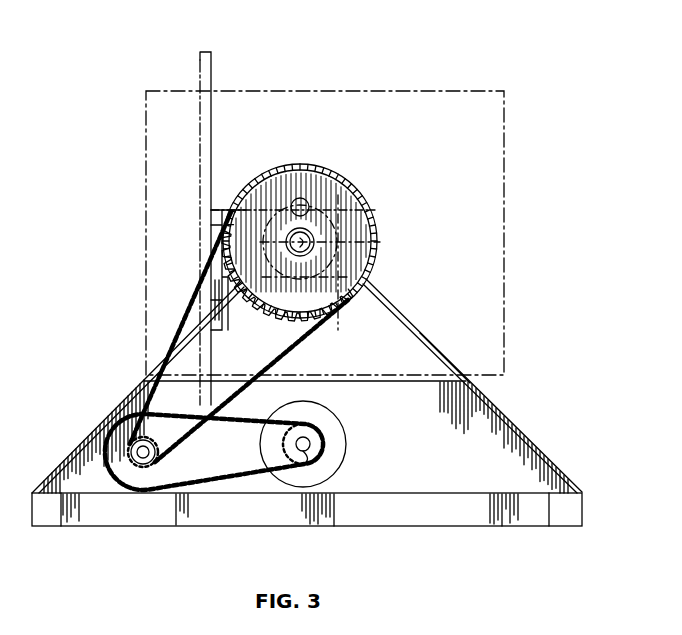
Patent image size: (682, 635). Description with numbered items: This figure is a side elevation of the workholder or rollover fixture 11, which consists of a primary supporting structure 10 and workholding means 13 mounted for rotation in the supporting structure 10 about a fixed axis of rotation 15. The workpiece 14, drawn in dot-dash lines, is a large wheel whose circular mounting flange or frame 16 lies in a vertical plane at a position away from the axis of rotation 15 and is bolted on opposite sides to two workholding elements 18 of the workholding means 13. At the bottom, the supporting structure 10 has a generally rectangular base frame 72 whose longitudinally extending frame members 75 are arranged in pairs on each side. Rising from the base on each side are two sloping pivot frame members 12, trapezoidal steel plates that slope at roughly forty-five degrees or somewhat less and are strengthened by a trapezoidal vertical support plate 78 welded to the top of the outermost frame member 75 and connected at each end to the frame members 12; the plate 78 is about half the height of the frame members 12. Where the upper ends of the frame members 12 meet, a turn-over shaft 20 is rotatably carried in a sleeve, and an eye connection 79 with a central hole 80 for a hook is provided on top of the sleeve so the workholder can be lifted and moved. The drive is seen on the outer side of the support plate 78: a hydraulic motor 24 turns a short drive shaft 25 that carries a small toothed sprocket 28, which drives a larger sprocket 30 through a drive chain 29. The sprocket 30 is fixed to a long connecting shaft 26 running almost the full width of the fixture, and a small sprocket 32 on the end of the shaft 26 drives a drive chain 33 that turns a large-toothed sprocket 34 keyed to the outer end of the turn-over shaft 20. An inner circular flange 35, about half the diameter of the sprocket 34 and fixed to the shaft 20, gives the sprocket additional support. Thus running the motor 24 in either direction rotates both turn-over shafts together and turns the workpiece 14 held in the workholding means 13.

The primary supporting structure 10 is at (582, 513).
The workholder or rollover fixture 11 is at (142, 380).
The sloping pivot frame member 12 is at (500, 437).
The workholding means 13 is at (212, 222).
The workpiece 14 is at (503, 200).
The axis of rotation 15 is at (376, 243).
The circular mounting flange or frame 16 is at (211, 62).
The workholding element 18 is at (222, 210).
The turn-over shaft 20 is at (346, 214).
The motor 24 is at (340, 450).
The drive shaft 25 is at (327, 493).
The connecting shaft 26 is at (141, 460).
The toothed sprocket 28 is at (322, 433).
The drive chain 29 is at (224, 484).
The sprocket 30 is at (186, 456).
The small sprocket 32 is at (118, 418).
The drive chain 33 is at (186, 318).
The large-toothed sprocket 34 is at (275, 313).
The inner circular flange 35 is at (372, 210).
The base frame 72 is at (105, 512).
The longitudinally extending frame member 75 is at (486, 514).
The vertical support plate 78 is at (480, 422).
The eye connection 79 is at (299, 166).
The hole 80 is at (319, 192).